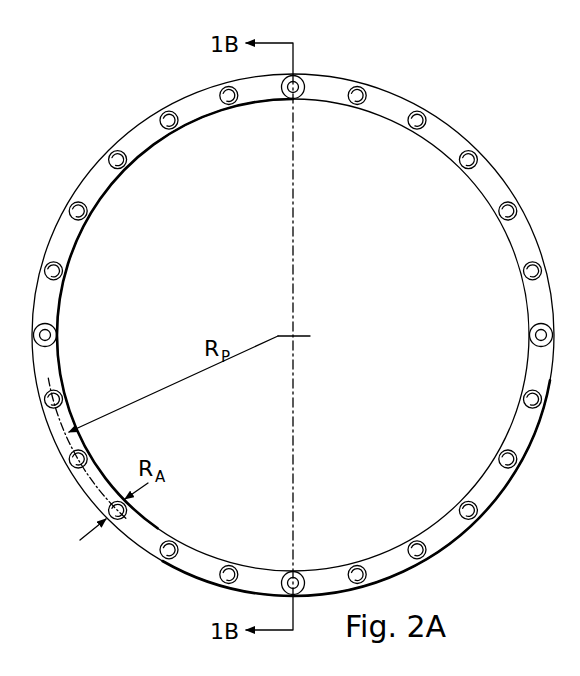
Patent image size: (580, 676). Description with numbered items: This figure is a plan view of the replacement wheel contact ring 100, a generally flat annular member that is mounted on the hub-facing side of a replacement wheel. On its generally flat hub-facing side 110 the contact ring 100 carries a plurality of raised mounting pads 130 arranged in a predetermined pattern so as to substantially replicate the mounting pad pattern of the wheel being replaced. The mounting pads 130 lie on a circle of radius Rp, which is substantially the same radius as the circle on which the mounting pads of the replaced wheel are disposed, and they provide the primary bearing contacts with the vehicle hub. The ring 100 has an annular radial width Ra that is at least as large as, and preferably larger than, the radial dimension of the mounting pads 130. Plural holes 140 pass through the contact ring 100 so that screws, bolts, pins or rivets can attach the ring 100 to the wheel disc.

The replacement wheel contact ring 100 is at (172, 91).
The hub-facing side 110 is at (477, 512).
The mounting pads 130 is at (88, 205).
The holes 140 is at (302, 77).